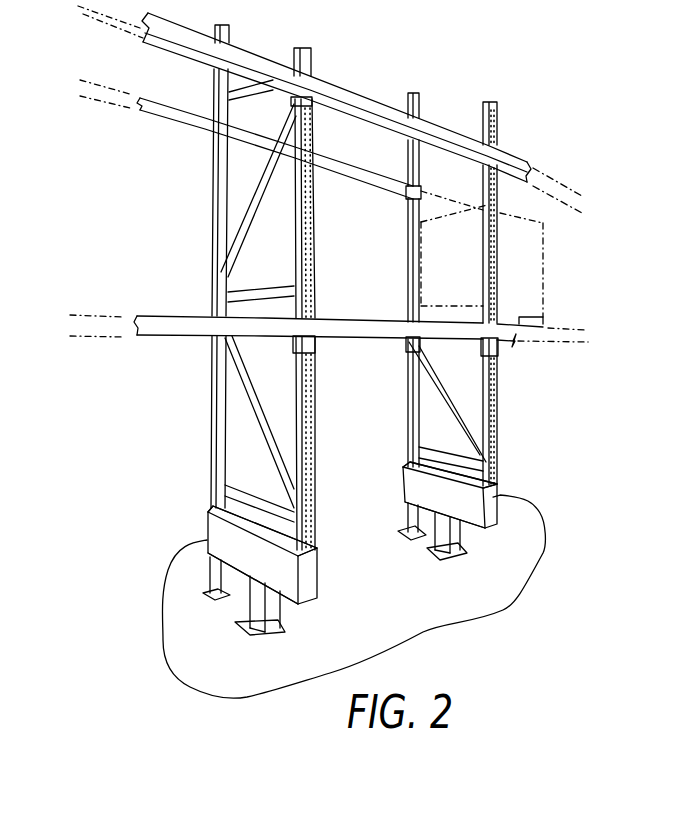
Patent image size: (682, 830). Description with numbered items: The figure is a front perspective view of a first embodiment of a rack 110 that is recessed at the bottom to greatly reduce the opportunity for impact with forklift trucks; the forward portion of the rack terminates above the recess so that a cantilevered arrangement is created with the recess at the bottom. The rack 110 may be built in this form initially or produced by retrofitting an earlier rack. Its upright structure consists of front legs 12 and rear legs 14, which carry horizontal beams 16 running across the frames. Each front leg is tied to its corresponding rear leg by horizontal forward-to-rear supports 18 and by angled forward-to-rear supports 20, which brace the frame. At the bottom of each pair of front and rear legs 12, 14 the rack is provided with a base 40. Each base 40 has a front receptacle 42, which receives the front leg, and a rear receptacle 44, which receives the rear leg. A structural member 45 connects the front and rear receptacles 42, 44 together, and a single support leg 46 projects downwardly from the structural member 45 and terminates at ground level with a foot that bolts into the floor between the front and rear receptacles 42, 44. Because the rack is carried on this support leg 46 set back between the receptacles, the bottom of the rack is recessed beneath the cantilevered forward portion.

The rack 110 is at (515, 91).
The front legs 12 is at (306, 252).
The rear legs 14 is at (213, 217).
The horizontal beams 16 is at (334, 152).
The horizontal forward-to-rear supports 18 is at (268, 291).
The angled forward-to-rear supports 20 is at (252, 192).
The base 40 is at (349, 537).
The front receptacle 42 is at (313, 564).
The rear receptacle 44 is at (206, 520).
The structural member 45 is at (257, 572).
The support leg 46 is at (272, 620).